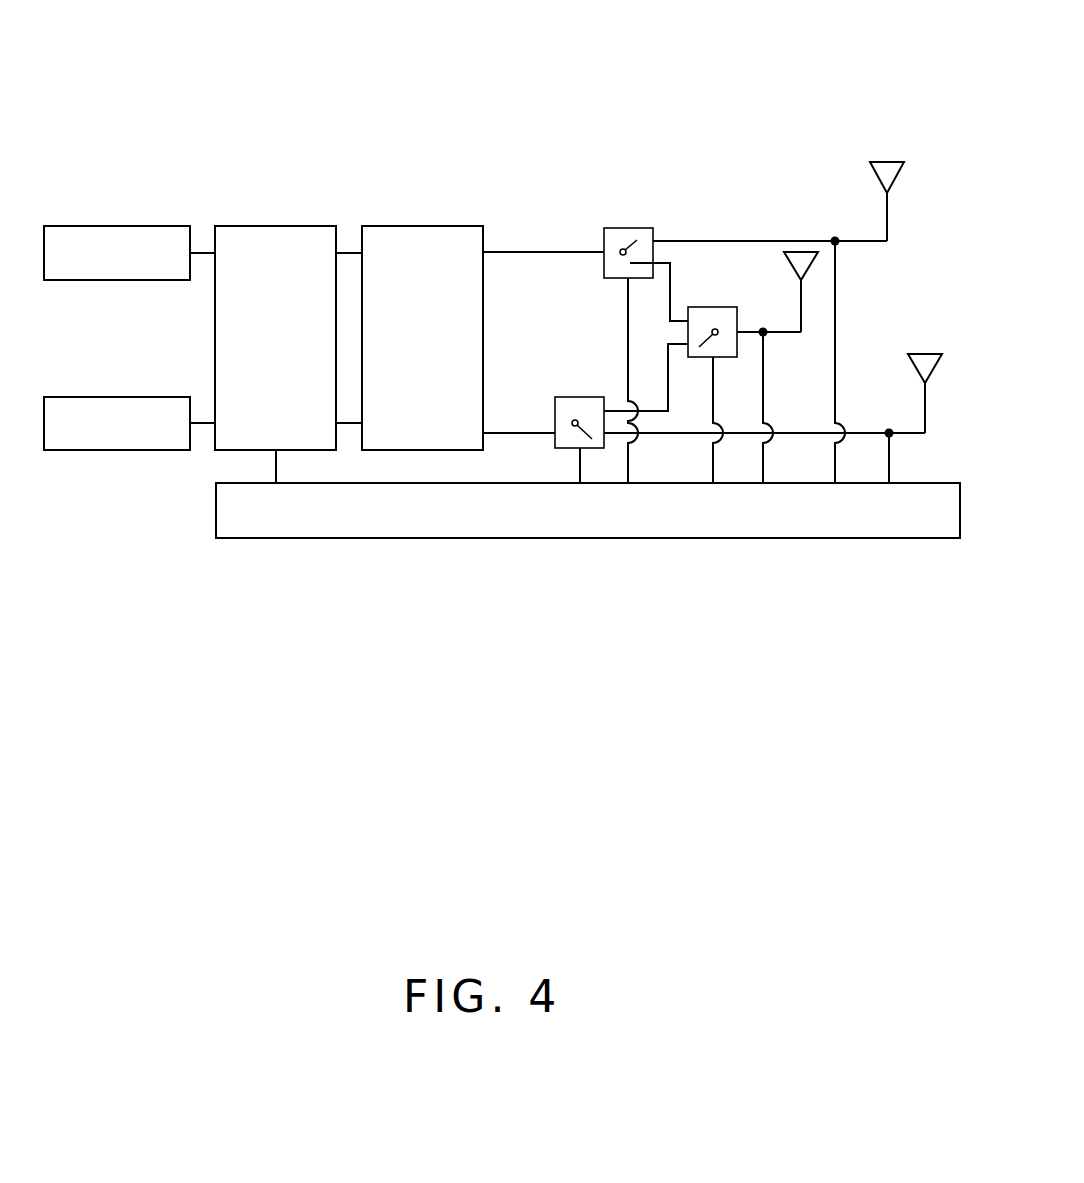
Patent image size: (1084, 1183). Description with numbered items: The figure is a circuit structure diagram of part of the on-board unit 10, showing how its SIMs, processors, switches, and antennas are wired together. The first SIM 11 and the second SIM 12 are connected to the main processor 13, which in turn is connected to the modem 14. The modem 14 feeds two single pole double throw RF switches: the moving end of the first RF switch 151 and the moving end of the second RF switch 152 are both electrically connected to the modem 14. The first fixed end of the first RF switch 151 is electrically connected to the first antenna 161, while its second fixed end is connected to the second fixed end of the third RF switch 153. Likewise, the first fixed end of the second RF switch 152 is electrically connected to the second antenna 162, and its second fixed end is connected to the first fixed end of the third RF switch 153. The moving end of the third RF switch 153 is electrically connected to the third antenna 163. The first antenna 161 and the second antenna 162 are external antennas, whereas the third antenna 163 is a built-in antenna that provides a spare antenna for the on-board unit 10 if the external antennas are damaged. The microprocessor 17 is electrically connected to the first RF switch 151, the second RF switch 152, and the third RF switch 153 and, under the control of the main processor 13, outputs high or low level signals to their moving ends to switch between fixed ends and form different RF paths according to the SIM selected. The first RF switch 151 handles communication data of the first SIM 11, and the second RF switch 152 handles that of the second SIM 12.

The on-board unit 10 is at (524, 44).
The first subscriber identity module 11 is at (118, 226).
The second subscriber identity module 12 is at (112, 450).
The main processor 13 is at (248, 226).
The modem 14 is at (396, 226).
The first RF switch 151 is at (627, 228).
The second RF switch 152 is at (578, 397).
The third RF switch 153 is at (713, 307).
The first antenna 161 is at (886, 162).
The second antenna 162 is at (925, 354).
The third antenna 163 is at (801, 252).
The microprocessor 17 is at (778, 538).